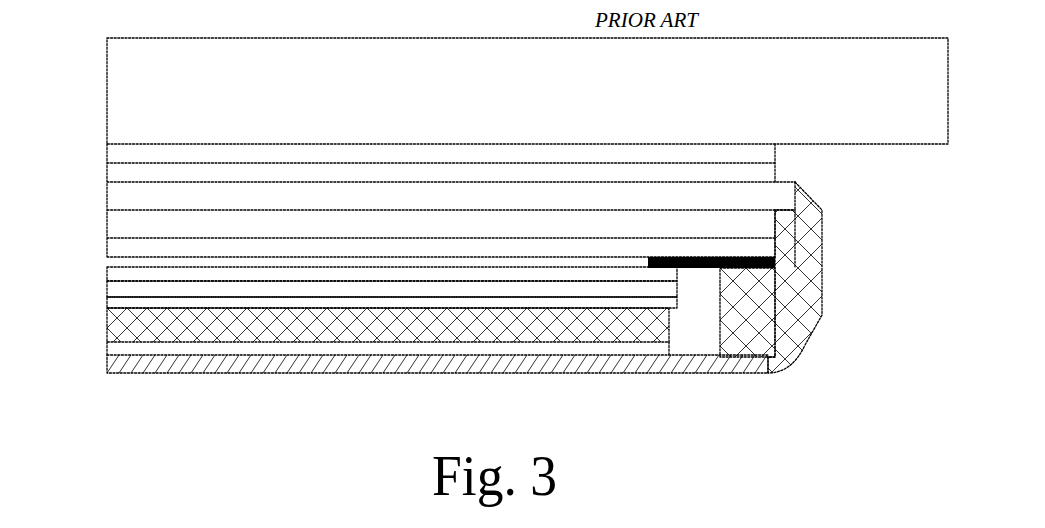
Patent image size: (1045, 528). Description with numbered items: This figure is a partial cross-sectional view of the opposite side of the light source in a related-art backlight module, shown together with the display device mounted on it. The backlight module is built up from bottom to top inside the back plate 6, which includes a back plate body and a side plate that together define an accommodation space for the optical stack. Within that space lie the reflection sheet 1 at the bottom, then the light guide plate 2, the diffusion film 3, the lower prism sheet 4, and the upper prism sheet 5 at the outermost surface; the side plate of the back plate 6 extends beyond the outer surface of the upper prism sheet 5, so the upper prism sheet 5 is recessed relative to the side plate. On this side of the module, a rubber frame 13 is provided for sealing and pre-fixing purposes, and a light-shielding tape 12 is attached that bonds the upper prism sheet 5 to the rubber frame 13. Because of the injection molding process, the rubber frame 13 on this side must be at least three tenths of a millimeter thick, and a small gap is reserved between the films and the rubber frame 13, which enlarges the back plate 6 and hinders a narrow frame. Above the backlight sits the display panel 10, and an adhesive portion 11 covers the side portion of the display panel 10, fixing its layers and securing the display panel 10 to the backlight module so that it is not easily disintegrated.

The reflection sheet 1 is at (558, 352).
The light guide plate 2 is at (468, 333).
The diffusion film 3 is at (345, 303).
The lower prism sheet 4 is at (245, 293).
The upper prism sheet 5 is at (138, 275).
The back plate 6 is at (770, 358).
The display panel 10 is at (110, 38).
The adhesive portion 11 is at (808, 298).
The light-shielding tape 12 is at (763, 257).
The rubber frame 13 is at (740, 347).